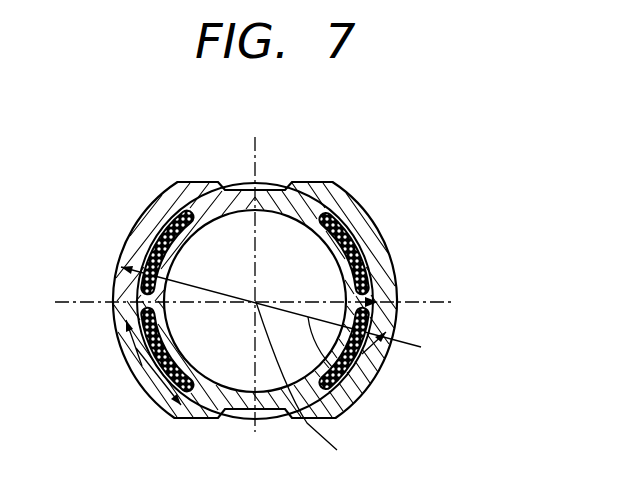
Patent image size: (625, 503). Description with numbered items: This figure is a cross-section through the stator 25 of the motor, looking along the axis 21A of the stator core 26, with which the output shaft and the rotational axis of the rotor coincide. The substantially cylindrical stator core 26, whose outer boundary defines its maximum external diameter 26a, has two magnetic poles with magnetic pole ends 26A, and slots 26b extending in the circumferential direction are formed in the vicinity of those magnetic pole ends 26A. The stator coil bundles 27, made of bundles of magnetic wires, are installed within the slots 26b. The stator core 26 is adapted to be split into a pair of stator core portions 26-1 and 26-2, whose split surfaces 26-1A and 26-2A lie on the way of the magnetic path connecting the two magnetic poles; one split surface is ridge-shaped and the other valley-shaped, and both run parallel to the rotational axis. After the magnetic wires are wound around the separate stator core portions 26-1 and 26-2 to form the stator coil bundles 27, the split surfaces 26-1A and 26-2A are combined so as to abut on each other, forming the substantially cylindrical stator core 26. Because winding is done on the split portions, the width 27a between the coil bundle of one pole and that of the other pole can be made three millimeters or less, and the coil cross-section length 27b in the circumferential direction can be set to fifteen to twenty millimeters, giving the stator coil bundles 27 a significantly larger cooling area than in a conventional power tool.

The axis of stator core 21A is at (314, 388).
The stator 25 is at (402, 178).
The stator core 26 is at (127, 262).
The stator core portion 26-1 is at (390, 228).
The split surface 26-1A is at (400, 316).
The stator core portion 26-2 is at (421, 347).
The split surface 26-2A is at (405, 284).
The magnetic pole end 26A is at (312, 232).
The maximum external diameter 26a is at (360, 378).
The slot 26b is at (352, 231).
The stator coil bundle 27 is at (386, 256).
The width between stator coil bundles 27a is at (405, 284).
The coil cross-section length 27b is at (133, 368).